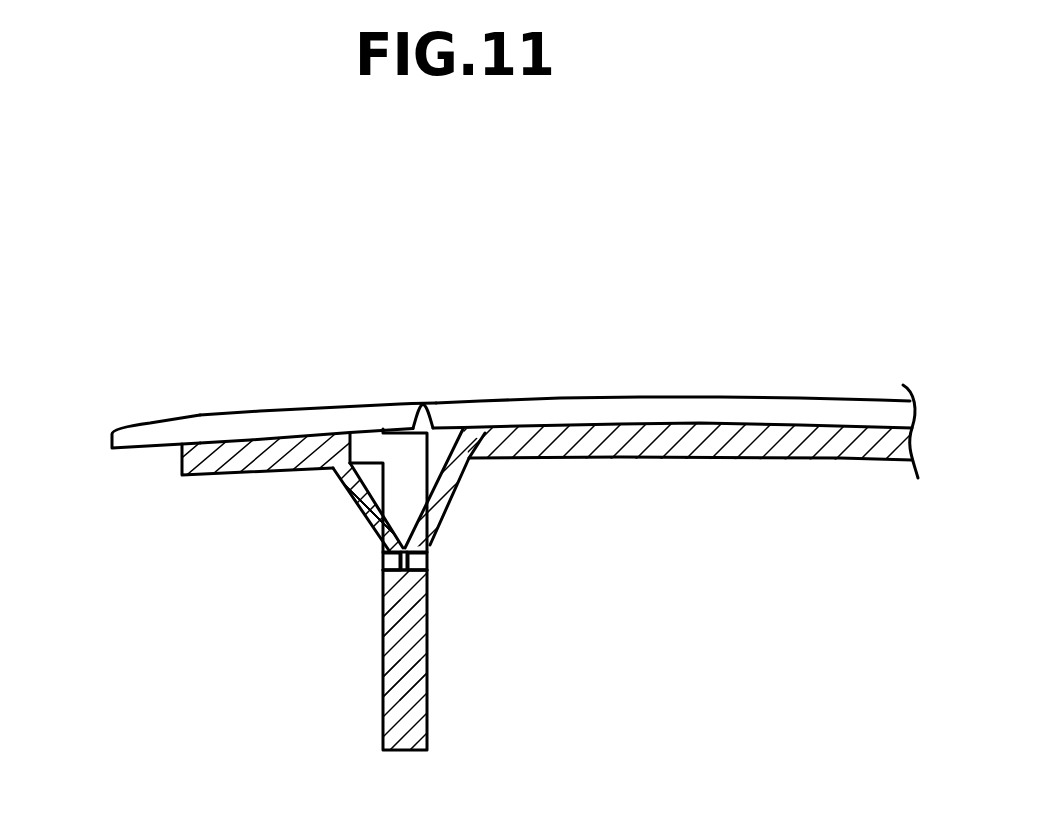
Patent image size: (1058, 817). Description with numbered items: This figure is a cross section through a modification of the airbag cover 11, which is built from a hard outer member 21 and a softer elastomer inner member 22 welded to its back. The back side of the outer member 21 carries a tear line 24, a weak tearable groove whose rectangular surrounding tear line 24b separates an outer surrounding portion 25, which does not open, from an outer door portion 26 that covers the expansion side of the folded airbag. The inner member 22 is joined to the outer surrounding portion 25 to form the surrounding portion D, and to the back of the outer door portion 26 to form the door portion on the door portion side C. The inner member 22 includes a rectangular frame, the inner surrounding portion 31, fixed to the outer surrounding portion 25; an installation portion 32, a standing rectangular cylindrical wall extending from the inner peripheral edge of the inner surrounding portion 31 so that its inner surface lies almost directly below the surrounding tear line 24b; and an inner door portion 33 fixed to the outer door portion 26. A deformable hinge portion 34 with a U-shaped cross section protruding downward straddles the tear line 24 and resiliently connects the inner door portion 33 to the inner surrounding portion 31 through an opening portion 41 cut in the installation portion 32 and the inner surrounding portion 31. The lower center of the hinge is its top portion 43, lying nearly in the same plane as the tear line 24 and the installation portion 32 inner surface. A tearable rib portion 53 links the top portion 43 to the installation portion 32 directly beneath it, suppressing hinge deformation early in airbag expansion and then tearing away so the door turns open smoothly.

The cover 11 is at (205, 290).
The outer member 21 is at (128, 438).
The inner member 22 is at (180, 460).
The tear line 24 is at (420, 400).
The surrounding tear line 24b is at (431, 400).
The outer surrounding portion 25 is at (281, 417).
The outer door portion 26 is at (762, 398).
The inner surrounding portion 31 is at (252, 475).
The installation portion 32 is at (397, 667).
The inner door portion 33 is at (762, 458).
The hinge portion 34 is at (440, 513).
The opening portion 41 is at (427, 554).
The top portion 43 is at (387, 556).
The rib portion 53 is at (427, 562).
The surrounding portion D is at (211, 418).
The door portion side C is at (673, 397).